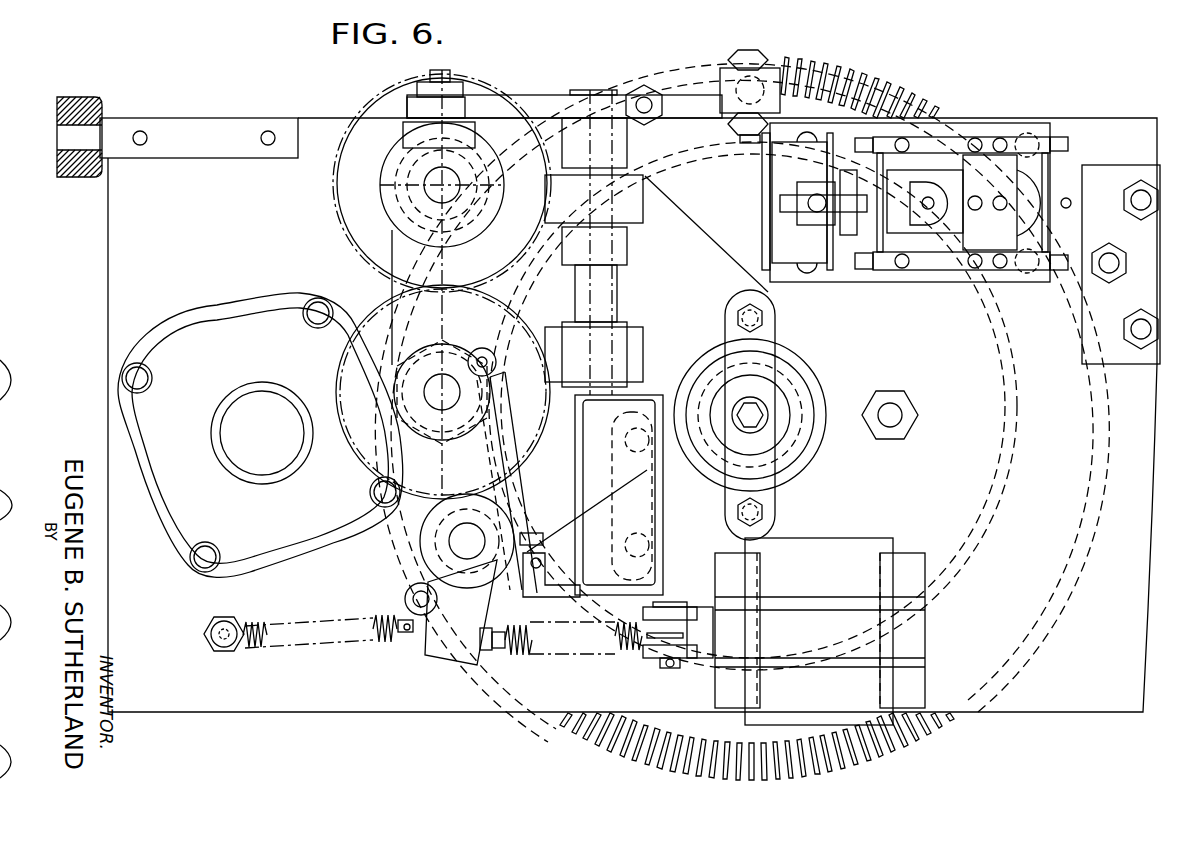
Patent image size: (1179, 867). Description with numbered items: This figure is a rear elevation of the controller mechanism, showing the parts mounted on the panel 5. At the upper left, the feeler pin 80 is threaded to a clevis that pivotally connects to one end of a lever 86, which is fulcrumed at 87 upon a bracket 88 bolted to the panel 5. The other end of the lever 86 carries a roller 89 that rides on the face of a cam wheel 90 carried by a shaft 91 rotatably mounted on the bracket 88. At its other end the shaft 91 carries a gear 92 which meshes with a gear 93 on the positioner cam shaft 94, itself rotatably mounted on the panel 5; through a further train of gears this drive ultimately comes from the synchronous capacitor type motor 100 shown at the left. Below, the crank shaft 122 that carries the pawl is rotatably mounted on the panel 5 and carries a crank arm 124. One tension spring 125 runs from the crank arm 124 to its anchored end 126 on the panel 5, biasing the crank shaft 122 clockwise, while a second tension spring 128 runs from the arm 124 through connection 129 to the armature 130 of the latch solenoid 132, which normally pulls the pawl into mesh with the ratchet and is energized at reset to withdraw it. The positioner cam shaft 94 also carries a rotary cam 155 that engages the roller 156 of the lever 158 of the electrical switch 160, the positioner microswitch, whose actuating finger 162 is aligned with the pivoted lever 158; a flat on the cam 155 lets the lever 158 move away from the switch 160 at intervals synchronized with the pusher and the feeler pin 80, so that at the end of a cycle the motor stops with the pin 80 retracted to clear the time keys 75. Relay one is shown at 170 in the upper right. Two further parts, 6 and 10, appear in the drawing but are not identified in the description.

The panel 5 is at (120, 264).
The mounting block 6 is at (65, 138).
The toothed dial 10 is at (905, 100).
The time keys 75 is at (912, 722).
The feeler pin 80 is at (758, 84).
The lever 86 is at (522, 110).
The fulcrum 87 is at (593, 97).
The bracket 88 is at (707, 248).
The roller 89 is at (405, 128).
The cam wheel 90 is at (398, 184).
The shaft 91 is at (430, 196).
The gear 92 is at (340, 178).
The gear 93 is at (379, 306).
The positioner cam shaft 94 is at (445, 380).
The synchronous capacitor type motor 100 is at (185, 343).
The crank shaft 122 is at (465, 541).
The crank arm 124 is at (442, 646).
The tension spring 125 is at (325, 636).
The spring end 126 is at (222, 646).
The tension spring 128 is at (590, 645).
The connection 129 is at (671, 668).
The armature 130 is at (705, 606).
The latch solenoid 132 is at (820, 631).
The rotary cam 155 is at (396, 408).
The roller 156 is at (483, 349).
The lever 158 is at (505, 458).
The electrical switch 160 is at (637, 506).
The actuating finger 162 is at (532, 533).
The relay 170 is at (940, 163).